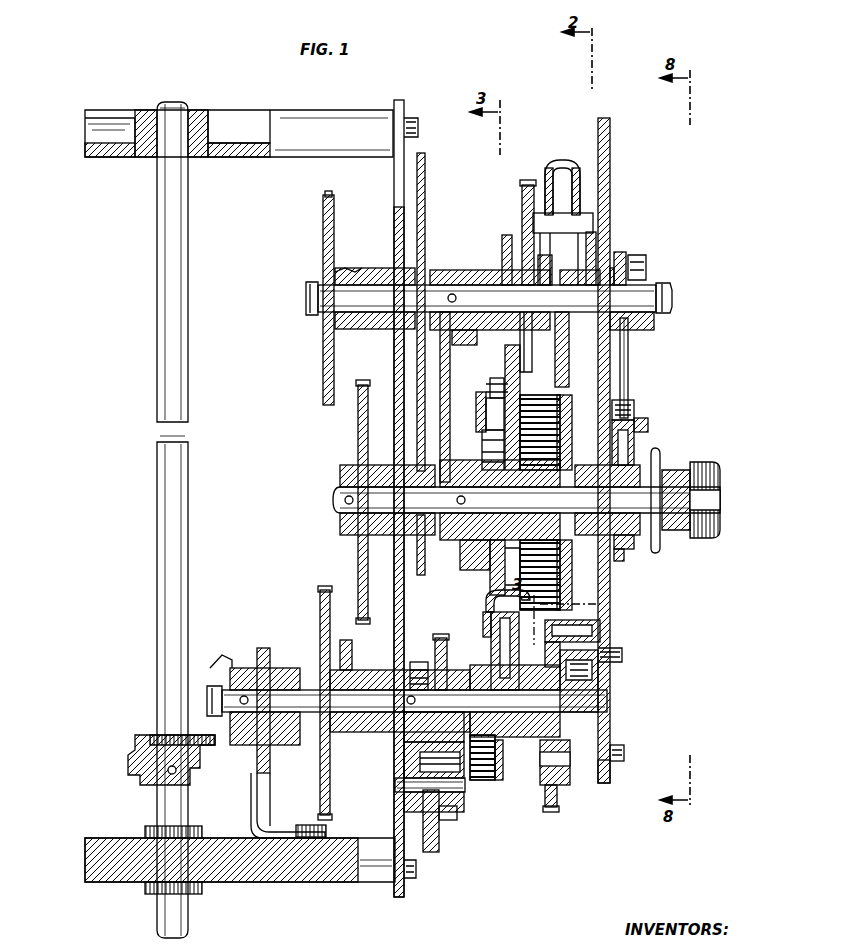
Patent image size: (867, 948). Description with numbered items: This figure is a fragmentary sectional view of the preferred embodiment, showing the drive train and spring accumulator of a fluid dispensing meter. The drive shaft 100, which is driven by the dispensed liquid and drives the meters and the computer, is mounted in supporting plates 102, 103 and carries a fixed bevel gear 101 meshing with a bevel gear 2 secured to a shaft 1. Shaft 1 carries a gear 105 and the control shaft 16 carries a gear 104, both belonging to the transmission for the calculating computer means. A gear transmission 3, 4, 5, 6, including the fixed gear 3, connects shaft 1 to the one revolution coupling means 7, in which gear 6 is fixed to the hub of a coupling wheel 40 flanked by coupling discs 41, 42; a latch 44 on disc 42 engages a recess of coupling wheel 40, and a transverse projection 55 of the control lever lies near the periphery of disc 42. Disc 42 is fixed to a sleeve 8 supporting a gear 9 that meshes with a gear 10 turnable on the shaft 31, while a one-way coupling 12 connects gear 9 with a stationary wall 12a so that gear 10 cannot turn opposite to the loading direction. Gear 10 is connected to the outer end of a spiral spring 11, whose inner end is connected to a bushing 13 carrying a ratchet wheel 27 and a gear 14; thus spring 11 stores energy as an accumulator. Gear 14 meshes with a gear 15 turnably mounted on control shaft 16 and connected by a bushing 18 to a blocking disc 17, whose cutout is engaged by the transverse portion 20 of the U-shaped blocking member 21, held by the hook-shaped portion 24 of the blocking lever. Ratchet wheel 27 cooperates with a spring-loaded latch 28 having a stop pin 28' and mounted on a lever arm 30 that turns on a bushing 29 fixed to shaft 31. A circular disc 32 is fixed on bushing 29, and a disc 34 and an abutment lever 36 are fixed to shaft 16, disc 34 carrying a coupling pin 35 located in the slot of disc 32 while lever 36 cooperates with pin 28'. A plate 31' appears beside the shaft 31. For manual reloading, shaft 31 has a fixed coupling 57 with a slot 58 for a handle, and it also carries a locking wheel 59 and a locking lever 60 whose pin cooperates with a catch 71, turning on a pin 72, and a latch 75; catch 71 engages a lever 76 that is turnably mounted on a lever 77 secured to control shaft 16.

The shaft 1 is at (305, 688).
The bevel gear 2 is at (250, 728).
The fixed gear 3 is at (420, 662).
The gear 4 is at (418, 870).
The gear 5 is at (444, 826).
The gear 6 is at (438, 670).
The coupling means 7 is at (503, 785).
The sleeve 8 is at (540, 744).
The gear 9 is at (550, 810).
The gear 10 is at (562, 554).
The spiral spring 11 is at (560, 440).
The one-way coupling 12 is at (624, 752).
The stationary wall 12a is at (610, 775).
The bushing 13 is at (572, 470).
The gear 14 is at (522, 420).
The gear 15 is at (528, 186).
The control shaft 16 is at (672, 298).
The blocking disc 17 is at (569, 366).
The bushing 18 is at (528, 340).
The transverse portion 20 is at (610, 215).
The blocking member 21 is at (502, 240).
The hook-shaped portion 24 is at (563, 170).
The ratchet wheel 27 is at (488, 552).
The latch 28 is at (476, 412).
The stop pin 28' is at (478, 387).
The bushing 29 is at (478, 574).
The lever arm 30 is at (482, 440).
The shaft 31 is at (510, 498).
The plate 31' is at (348, 502).
The circular disc 32 is at (442, 268).
The disc 34 is at (405, 378).
The coupling pin 35 is at (443, 395).
The abutment lever 36 is at (470, 256).
The coupling wheel 40 is at (470, 790).
The coupling disc 41 is at (448, 648).
The coupling disc 42 is at (550, 656).
The latch 44 is at (486, 618).
The transverse projection 55 is at (484, 604).
The fixed coupling 57 is at (672, 468).
The slot 58 is at (712, 500).
The locking wheel 59 is at (618, 562).
The locking lever 60 is at (634, 542).
The catch 71 is at (634, 404).
The pin 72 is at (648, 422).
The latch 75 is at (646, 446).
The lever 76 is at (628, 355).
The lever 77 is at (626, 256).
The drive shaft 100 is at (188, 900).
The bevel gear 101 is at (138, 770).
The supporting plate 102 is at (287, 873).
The supporting plate 103 is at (244, 157).
The gear 104 is at (323, 226).
The gear 105 is at (320, 600).